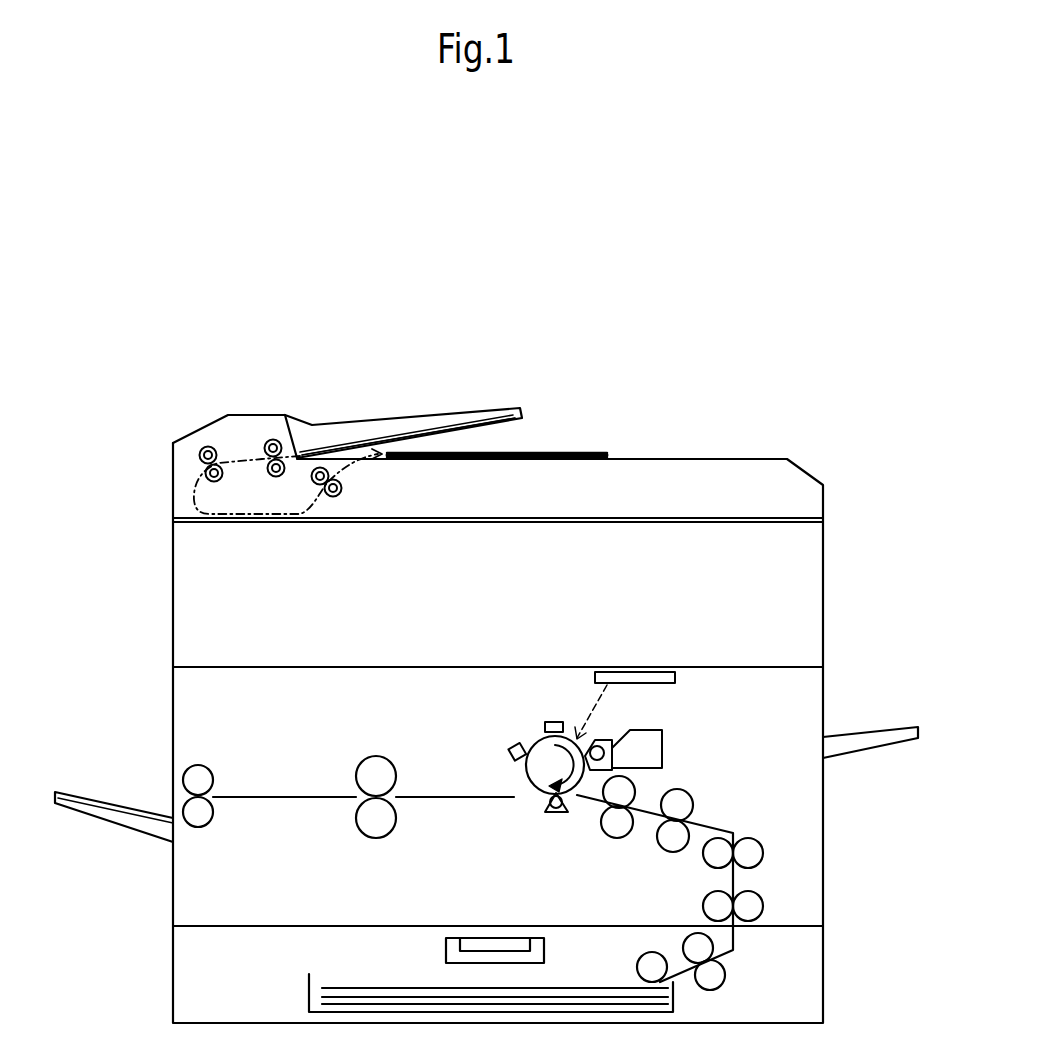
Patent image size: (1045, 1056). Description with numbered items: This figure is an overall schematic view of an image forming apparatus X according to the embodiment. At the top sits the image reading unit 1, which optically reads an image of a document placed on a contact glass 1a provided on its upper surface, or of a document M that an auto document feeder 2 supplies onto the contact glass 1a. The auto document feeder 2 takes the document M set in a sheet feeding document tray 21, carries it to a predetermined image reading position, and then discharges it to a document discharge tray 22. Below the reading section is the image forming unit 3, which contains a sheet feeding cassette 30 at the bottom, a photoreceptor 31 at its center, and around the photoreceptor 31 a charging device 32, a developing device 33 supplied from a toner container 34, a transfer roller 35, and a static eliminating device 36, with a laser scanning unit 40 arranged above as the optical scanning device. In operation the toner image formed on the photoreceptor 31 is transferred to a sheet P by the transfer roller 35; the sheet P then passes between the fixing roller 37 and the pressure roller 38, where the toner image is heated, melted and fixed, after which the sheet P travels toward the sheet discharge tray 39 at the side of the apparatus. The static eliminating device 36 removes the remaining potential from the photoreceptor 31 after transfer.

The image forming apparatus X is at (143, 407).
The image reading unit 1 is at (822, 566).
The contact glass 1a is at (629, 520).
The auto document feeder 2 is at (258, 415).
The sheet feeding document tray 21 is at (467, 408).
The document discharge tray 22 is at (500, 460).
The document M is at (415, 432).
The image forming unit 3 is at (823, 848).
The sheet feeding cassette 30 is at (673, 998).
The photoreceptor 31 is at (535, 792).
The charging device 32 is at (545, 725).
The developing device 33 is at (600, 742).
The toner container 34 is at (665, 745).
The transfer roller 35 is at (557, 814).
The static eliminating device 36 is at (511, 748).
The fixing roller 37 is at (376, 756).
The pressure roller 38 is at (357, 828).
The sheet discharge tray 39 is at (140, 832).
The laser scanning unit 40 is at (678, 678).
The sheet P is at (345, 988).